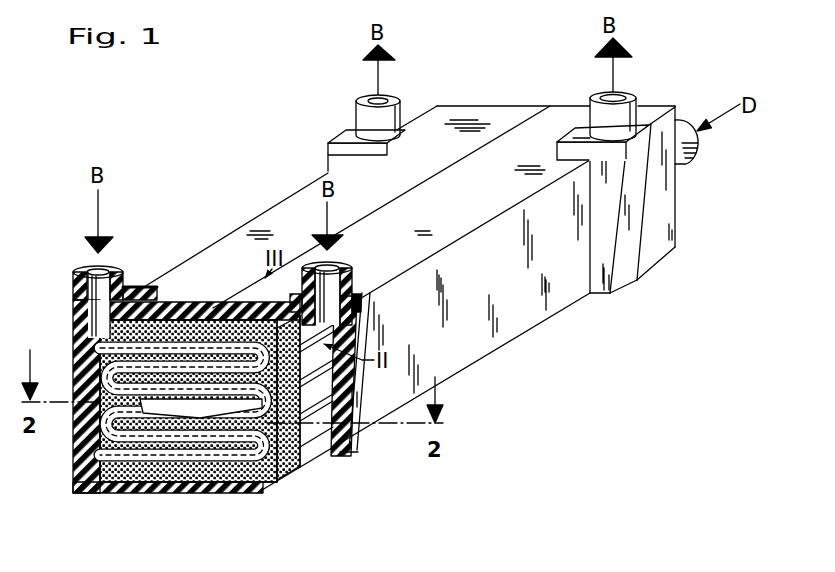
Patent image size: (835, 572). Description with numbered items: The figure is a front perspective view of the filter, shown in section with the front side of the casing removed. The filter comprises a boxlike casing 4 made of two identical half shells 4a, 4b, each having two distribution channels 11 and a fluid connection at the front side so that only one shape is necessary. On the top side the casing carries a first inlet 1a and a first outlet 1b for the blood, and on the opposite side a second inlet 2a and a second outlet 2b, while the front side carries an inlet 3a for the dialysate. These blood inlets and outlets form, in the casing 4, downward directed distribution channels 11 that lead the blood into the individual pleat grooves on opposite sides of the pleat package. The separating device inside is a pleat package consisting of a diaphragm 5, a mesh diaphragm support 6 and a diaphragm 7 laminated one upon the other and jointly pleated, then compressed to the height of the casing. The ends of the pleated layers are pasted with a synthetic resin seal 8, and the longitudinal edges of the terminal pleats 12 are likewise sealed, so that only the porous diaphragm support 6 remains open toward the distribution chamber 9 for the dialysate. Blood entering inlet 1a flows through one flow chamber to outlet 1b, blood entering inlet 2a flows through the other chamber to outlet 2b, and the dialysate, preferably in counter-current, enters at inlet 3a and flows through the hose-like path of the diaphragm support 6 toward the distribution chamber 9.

The first inlet 1a is at (127, 280).
The first outlet 1b is at (357, 116).
The second inlet 2a is at (352, 280).
The second outlet 2b is at (636, 114).
The dialysate inlet 3a is at (687, 160).
The boxlike casing 4 is at (266, 204).
The half shell 4a is at (521, 108).
The half shell 4b is at (550, 118).
The diaphragm membrane 5 is at (188, 350).
The diaphragm support 6 is at (212, 367).
The diaphragm membrane 7 is at (207, 392).
The synthetic resin seal 8 is at (167, 345).
The distribution chamber 9 is at (94, 436).
The distribution channel 11 is at (96, 330).
The terminal pleat 12 is at (107, 473).